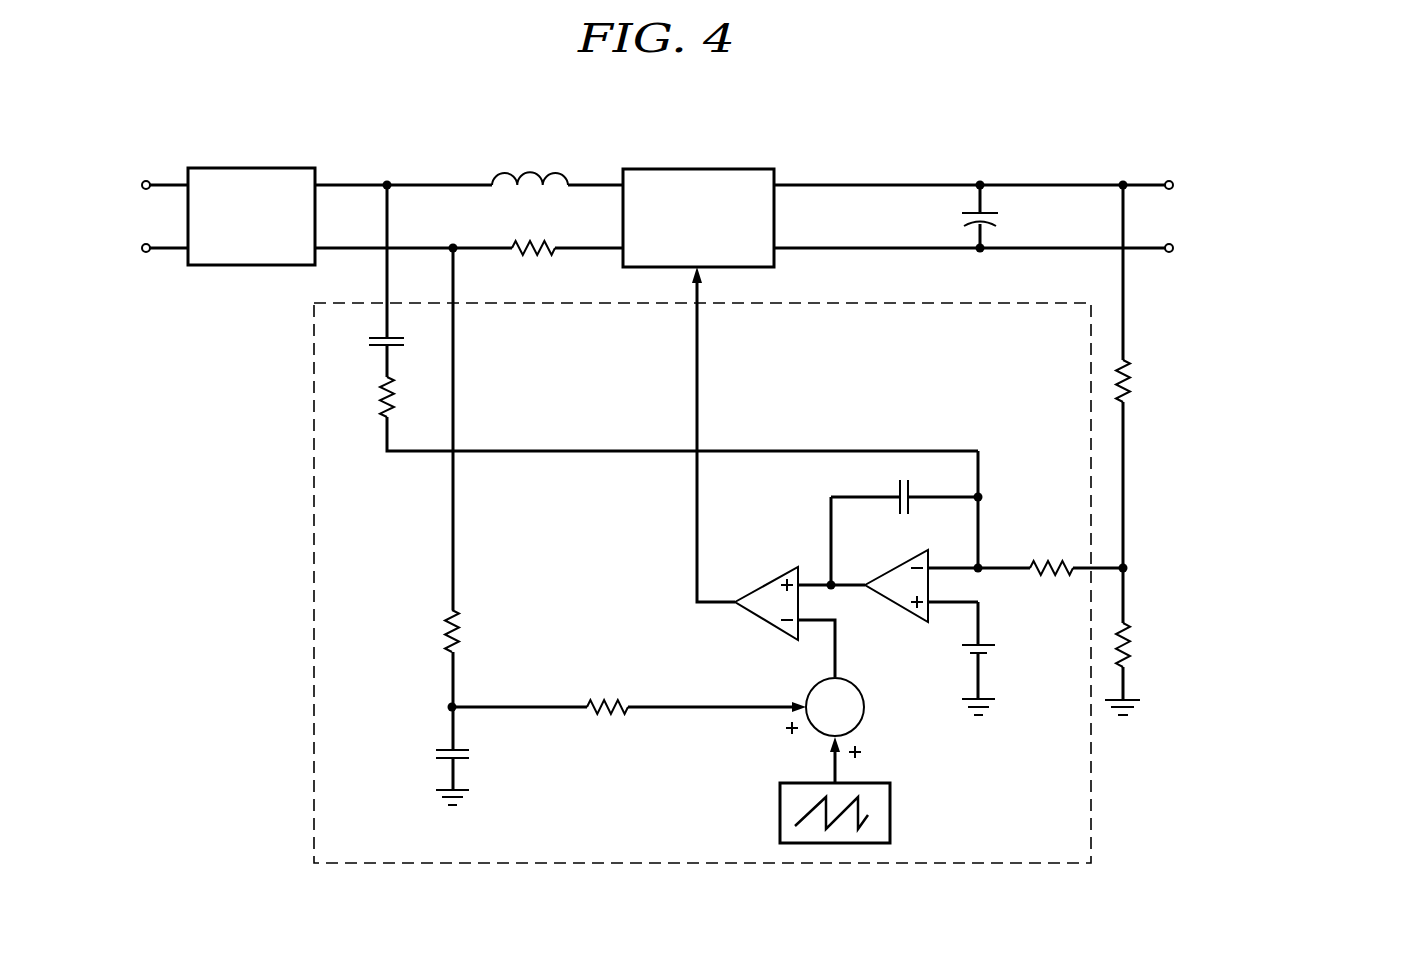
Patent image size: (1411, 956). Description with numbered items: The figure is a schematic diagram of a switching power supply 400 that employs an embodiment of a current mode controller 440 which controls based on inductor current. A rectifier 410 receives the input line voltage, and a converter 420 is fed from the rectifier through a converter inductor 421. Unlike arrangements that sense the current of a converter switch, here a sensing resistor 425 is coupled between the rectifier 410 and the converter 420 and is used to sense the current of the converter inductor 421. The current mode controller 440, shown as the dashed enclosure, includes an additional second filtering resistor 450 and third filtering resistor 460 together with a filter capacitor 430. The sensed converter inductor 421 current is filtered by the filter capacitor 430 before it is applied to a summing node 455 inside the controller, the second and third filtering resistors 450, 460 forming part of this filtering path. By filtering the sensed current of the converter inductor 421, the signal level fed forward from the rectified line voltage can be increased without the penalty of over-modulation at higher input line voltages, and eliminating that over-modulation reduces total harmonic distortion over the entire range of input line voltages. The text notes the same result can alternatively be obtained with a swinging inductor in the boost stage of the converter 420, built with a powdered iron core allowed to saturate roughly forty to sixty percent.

The switching power supply 400 is at (1280, 163).
The rectifier 410 is at (220, 168).
The converter 420 is at (680, 169).
The converter inductor 421 is at (508, 174).
The sensing resistor 425 is at (550, 255).
The filter capacitor 430 is at (437, 752).
The current mode controller 440 is at (314, 322).
The second filtering resistor 450 is at (446, 616).
The summing node 455 is at (865, 705).
The third filtering resistor 460 is at (605, 695).